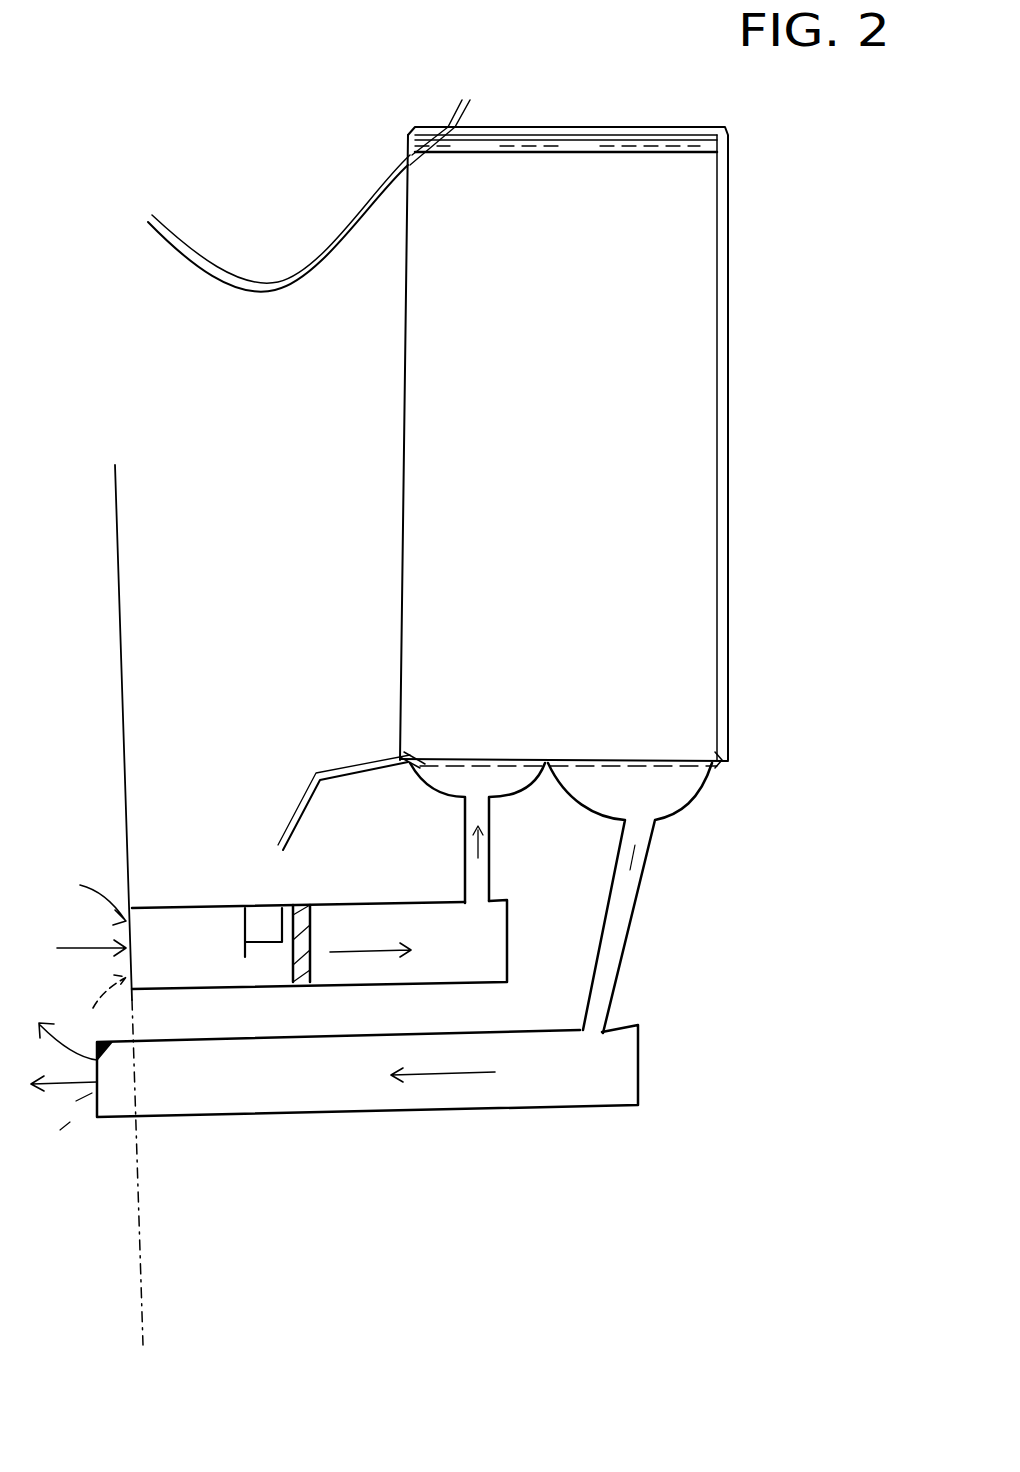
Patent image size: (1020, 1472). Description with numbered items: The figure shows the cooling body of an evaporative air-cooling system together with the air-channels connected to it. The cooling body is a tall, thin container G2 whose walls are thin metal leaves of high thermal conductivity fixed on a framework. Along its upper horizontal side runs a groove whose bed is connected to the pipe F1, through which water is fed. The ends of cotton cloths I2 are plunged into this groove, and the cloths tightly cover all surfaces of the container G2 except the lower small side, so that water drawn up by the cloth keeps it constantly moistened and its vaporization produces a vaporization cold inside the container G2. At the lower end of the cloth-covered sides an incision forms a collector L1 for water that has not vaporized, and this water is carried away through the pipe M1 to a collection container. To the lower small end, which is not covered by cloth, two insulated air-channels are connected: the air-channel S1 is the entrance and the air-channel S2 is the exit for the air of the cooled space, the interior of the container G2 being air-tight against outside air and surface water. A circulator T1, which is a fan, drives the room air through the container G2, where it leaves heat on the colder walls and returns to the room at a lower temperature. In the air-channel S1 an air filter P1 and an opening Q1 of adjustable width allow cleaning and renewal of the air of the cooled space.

The pipe F1 is at (348, 230).
The container G2 is at (728, 183).
The cotton cloths I2 is at (628, 412).
The collector L1 is at (722, 762).
The pipe M1 is at (308, 793).
The opening Q1 is at (255, 905).
The air filter P1 is at (302, 905).
The air-channel S1 is at (508, 930).
The air-channel S2 is at (640, 1073).
The circulator T1 is at (97, 1117).